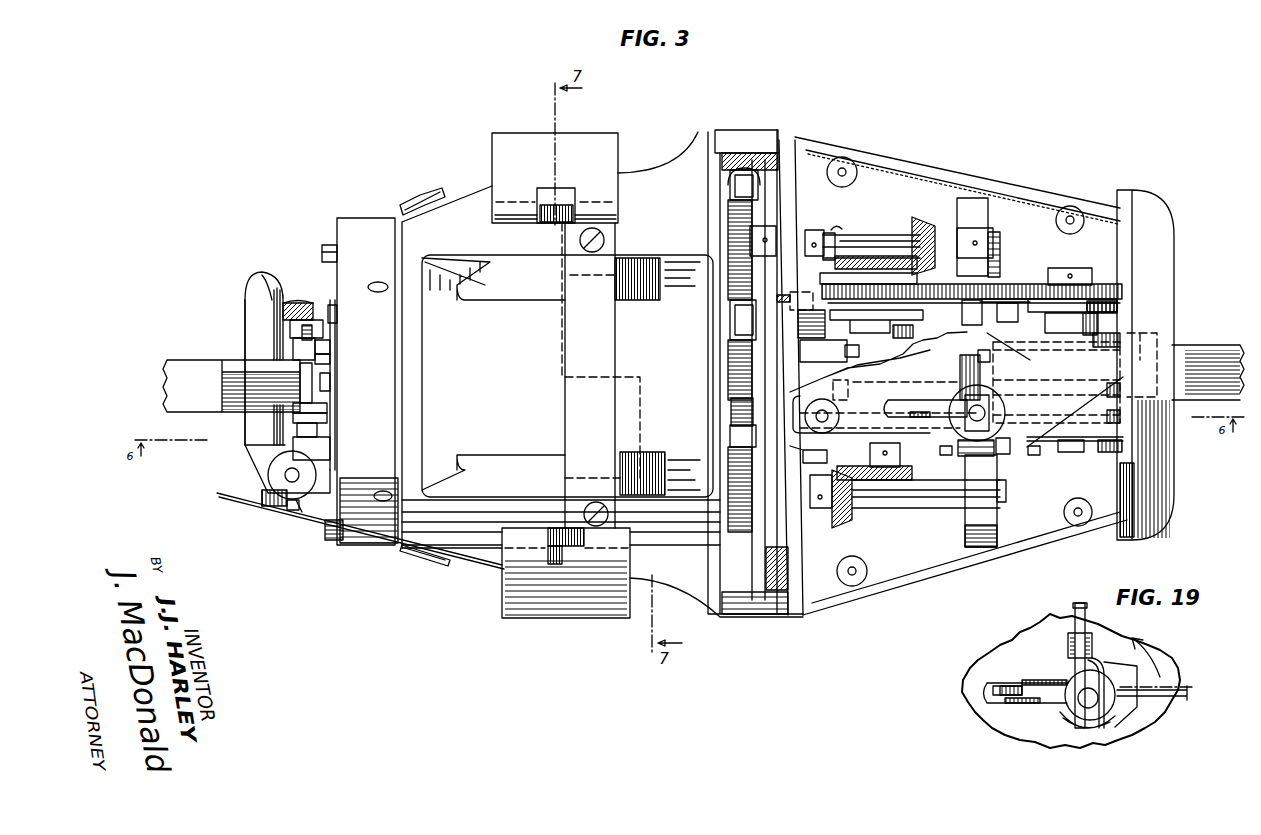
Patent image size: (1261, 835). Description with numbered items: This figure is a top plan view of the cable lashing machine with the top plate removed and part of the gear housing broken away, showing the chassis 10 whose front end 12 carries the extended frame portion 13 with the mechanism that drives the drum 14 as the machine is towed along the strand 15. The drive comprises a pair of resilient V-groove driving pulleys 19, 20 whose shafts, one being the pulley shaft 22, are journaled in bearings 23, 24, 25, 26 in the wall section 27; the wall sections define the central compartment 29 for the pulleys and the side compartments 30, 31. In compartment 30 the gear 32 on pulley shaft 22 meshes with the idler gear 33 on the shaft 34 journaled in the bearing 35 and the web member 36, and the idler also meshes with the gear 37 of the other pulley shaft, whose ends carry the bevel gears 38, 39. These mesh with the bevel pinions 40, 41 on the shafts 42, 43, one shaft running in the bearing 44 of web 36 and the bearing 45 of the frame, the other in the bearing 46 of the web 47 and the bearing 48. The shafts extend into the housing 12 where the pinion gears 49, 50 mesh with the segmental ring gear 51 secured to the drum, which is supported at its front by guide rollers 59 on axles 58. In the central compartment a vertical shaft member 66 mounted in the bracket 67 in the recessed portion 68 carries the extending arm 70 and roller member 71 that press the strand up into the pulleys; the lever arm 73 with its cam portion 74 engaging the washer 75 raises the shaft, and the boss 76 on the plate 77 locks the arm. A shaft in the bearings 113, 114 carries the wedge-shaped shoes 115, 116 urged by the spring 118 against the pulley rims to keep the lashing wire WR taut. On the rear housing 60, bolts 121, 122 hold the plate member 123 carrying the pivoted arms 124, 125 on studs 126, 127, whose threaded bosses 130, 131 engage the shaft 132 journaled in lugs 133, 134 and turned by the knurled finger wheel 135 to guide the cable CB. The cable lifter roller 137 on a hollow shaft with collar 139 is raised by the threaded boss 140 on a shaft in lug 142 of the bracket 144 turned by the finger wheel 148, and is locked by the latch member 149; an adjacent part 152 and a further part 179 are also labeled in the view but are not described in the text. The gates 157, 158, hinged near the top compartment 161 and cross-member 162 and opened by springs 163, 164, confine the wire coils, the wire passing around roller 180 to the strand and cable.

In FIG. 3, the chassis 10 is at (745, 132).
In FIG. 3, the front end of the chassis 12 is at (790, 600).
In FIG. 3, the extended frame portion 13 is at (1150, 205).
In FIG. 3, the drum 14 is at (487, 560).
In FIG. 3, the strand 15 is at (232, 372).
In FIG. 3, the V-groove driving pulley 19 is at (920, 352).
In FIG. 3, the V-groove driving pulley 20 is at (1150, 375).
In FIG. 3, the pulley shaft 22 is at (1070, 452).
In FIG. 3, the bearing 23 is at (840, 284).
In FIG. 3, the bearing 24 is at (886, 480).
In FIG. 3, the bearing 25 is at (1100, 300).
In FIG. 3, the bearing 26 is at (1108, 452).
In FIG. 3, the wall section 27 is at (1030, 305).
In FIG. 3, the central compartment 29 is at (1107, 320).
In FIG. 3, the compartment 30 is at (905, 162).
In FIG. 3, the compartment 31 is at (918, 565).
In FIG. 3, the gear 32 is at (1075, 268).
In FIG. 3, the idler gear 33 is at (998, 285).
In FIG. 3, the shaft 34 is at (995, 262).
In FIG. 3, the bearing 35 is at (1005, 335).
In FIG. 3, the web member 36 is at (970, 200).
In FIG. 3, the gear 37 is at (870, 262).
In FIG. 3, the bevel gear 38 is at (855, 256).
In FIG. 3, the bevel gear 39 is at (914, 484).
In FIG. 3, the bevel pinion 40 is at (922, 224).
In FIG. 3, the bevel pinion 41 is at (847, 510).
In FIG. 3, the shaft 42 is at (846, 234).
In FIG. 3, the shaft 43 is at (900, 505).
In FIG. 3, the bearing 44 is at (965, 232).
In FIG. 3, the bearing 45 is at (814, 230).
In FIG. 3, the bearing 46 is at (1001, 502).
In FIG. 3, the web 47 is at (978, 547).
In FIG. 3, the bearing 48 is at (827, 510).
In FIG. 3, the pinion gear 49 is at (738, 238).
In FIG. 3, the pinion gear 50 is at (735, 465).
In FIG. 3, the segmental ring gear 51 is at (735, 375).
In FIG. 3, the axle 58 is at (735, 190).
In FIG. 3, the guide roller 59 is at (728, 182).
In FIG. 3, the rear housing 60 is at (372, 548).
In FIG. 3, the vertical shaft member 66 is at (990, 405).
In FIG. 19, the vertical shaft member 66 is at (1080, 690).
In FIG. 3, the bracket 67 is at (1000, 416).
In FIG. 3, the recessed portion 68 is at (947, 455).
In FIG. 3, the extending arm 70 is at (1022, 349).
In FIG. 3, the roller member 71 is at (990, 360).
In FIG. 3, the lever arm 73 is at (900, 402).
In FIG. 19, the lever arm 73 is at (1083, 610).
In FIG. 3, the cam portion 74 is at (1002, 452).
In FIG. 19, the cam portion 74 is at (1105, 720).
In FIG. 3, the washer 75 is at (975, 455).
In FIG. 19, the washer 75 is at (1050, 690).
In FIG. 3, the boss 76 is at (972, 300).
In FIG. 3, the plate 77 is at (1005, 310).
In FIG. 3, the bearing 113 is at (820, 450).
In FIG. 3, the bearing 114 is at (798, 302).
In FIG. 3, the wedge-shaped shoe 115 is at (829, 351).
In FIG. 3, the wedge-shaped shoe 116 is at (848, 386).
In FIG. 3, the spring 118 is at (735, 408).
In FIG. 3, the bolt 121 is at (338, 307).
In FIG. 3, the bolt 122 is at (330, 450).
In FIG. 3, the plate member 123 is at (333, 315).
In FIG. 3, the pivoted arm 124 is at (327, 348).
In FIG. 3, the pivoted arm 125 is at (330, 412).
In FIG. 3, the stud 126 is at (328, 366).
In FIG. 3, the stud 127 is at (330, 398).
In FIG. 3, the threaded boss 130 is at (305, 345).
In FIG. 3, the threaded boss 131 is at (318, 420).
In FIG. 3, the shaft 132 is at (300, 372).
In FIG. 3, the lug 133 is at (303, 318).
In FIG. 3, the lug 134 is at (312, 470).
In FIG. 3, the knurled finger wheel 135 is at (285, 302).
In FIG. 3, the cable lifter roller 137 is at (248, 330).
In FIG. 3, the collar 139 is at (255, 283).
In FIG. 3, the internally threaded boss 140 is at (252, 455).
In FIG. 3, the projecting lug 142 is at (295, 505).
In FIG. 3, the bracket 144 is at (322, 515).
In FIG. 3, the knurled finger wheel 148 is at (285, 494).
In FIG. 3, the latch member 149 is at (262, 497).
In FIG. 3, the pin 152 is at (297, 510).
In FIG. 3, the gate 157 is at (524, 135).
In FIG. 3, the gate 158 is at (580, 618).
In FIG. 3, the top compartment 161 is at (567, 376).
In FIG. 3, the cross-member 162 is at (562, 395).
In FIG. 3, the spring 163 is at (575, 203).
In FIG. 3, the spring 164 is at (560, 550).
In FIG. 3, the clip 179 is at (415, 192).
In FIG. 3, the roller 180 is at (440, 566).
In FIG. 3, the lashing wire WR is at (415, 560).
In FIG. 3, the cable CB is at (205, 402).